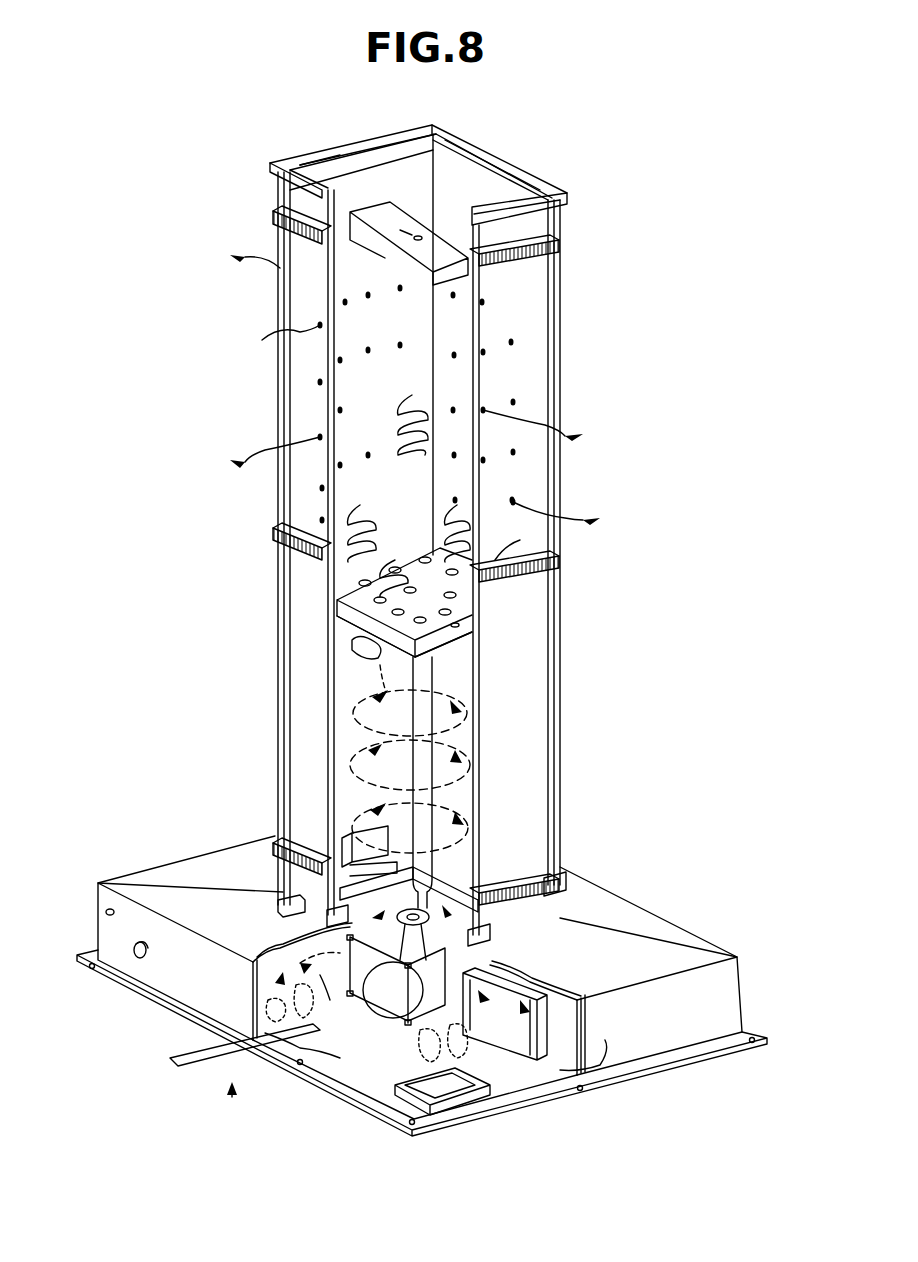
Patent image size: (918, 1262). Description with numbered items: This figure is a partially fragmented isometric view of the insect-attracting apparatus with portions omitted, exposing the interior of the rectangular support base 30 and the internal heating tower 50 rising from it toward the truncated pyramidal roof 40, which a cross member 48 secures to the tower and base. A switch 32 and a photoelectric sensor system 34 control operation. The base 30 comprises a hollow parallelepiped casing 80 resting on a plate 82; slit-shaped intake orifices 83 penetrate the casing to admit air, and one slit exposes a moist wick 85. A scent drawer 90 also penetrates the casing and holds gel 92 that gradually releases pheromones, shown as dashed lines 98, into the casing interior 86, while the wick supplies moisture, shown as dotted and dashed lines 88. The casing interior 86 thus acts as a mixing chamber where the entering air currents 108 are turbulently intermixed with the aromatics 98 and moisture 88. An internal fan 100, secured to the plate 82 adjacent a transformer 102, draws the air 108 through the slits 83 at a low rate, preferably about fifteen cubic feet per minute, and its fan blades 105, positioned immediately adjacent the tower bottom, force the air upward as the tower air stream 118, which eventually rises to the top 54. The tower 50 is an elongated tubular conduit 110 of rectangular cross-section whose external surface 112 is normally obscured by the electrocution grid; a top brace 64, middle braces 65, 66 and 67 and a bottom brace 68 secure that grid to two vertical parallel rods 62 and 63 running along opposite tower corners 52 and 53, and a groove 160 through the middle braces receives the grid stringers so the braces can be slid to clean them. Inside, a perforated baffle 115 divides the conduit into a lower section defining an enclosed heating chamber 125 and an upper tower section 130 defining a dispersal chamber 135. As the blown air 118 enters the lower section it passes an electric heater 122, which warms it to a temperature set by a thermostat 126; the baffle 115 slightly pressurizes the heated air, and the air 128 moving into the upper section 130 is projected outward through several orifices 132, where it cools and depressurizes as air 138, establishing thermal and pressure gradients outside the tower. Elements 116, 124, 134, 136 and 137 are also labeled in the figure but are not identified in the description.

The rectangular support base 30 is at (700, 905).
The switch 32 is at (95, 908).
The photoelectric sensor system 34 is at (135, 960).
The truncated pyramidal roof 40 is at (548, 160).
The cross member 48 is at (395, 218).
The internal heating tower 50 is at (305, 165).
The tower corner 52 is at (562, 230).
The tower corner 53 is at (283, 200).
The tower top 54 is at (330, 158).
The rod 62 is at (565, 215).
The rod 63 is at (280, 190).
The top brace 64 is at (275, 178).
The middle brace 65 is at (272, 222).
The middle brace 66 is at (272, 530).
The middle brace 67 is at (272, 846).
The bottom brace 68 is at (280, 895).
The casing 80 is at (725, 975).
The plate 82 is at (172, 1008).
The intake orifices 83 is at (265, 1033).
The wick 85 is at (232, 1100).
The casing interior 86 is at (330, 1075).
The moisture 88 is at (258, 982).
The scent drawer 90 is at (495, 1100).
The gel 92 is at (400, 1110).
The pheromones 98 is at (400, 1088).
The internal fan 100 is at (330, 935).
The transformer 102 is at (510, 975).
The fan blades 105 is at (405, 1000).
The entering air currents 108 is at (582, 1028).
The tubular conduit 110 is at (560, 650).
The external surface 112 is at (310, 660).
The perforated baffle 115 is at (318, 615).
The perforated plate 116 is at (335, 575).
The tower air stream 118 is at (455, 818).
The electric heater 122 is at (436, 680).
The housing 124 is at (350, 835).
The heating chamber 125 is at (352, 724).
The thermostat 126 is at (375, 660).
The air 128 is at (370, 450).
The upper tower section 130 is at (300, 305).
The orifices 132 is at (320, 382).
The top plate 134 is at (372, 148).
The dispersal chamber 135 is at (462, 162).
The right rear wall 136 is at (470, 340).
The perforations 137 is at (340, 338).
The cooled and depressurized air 138 is at (270, 350).
The groove 160 is at (498, 540).